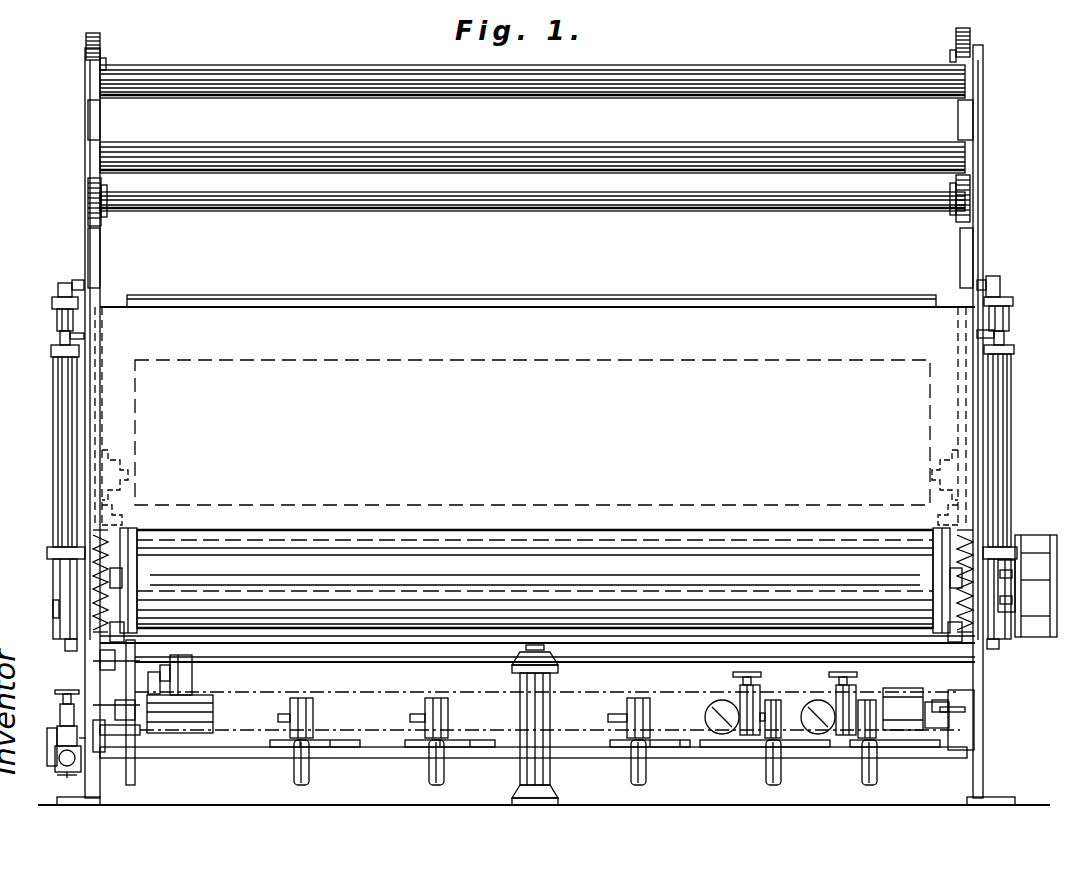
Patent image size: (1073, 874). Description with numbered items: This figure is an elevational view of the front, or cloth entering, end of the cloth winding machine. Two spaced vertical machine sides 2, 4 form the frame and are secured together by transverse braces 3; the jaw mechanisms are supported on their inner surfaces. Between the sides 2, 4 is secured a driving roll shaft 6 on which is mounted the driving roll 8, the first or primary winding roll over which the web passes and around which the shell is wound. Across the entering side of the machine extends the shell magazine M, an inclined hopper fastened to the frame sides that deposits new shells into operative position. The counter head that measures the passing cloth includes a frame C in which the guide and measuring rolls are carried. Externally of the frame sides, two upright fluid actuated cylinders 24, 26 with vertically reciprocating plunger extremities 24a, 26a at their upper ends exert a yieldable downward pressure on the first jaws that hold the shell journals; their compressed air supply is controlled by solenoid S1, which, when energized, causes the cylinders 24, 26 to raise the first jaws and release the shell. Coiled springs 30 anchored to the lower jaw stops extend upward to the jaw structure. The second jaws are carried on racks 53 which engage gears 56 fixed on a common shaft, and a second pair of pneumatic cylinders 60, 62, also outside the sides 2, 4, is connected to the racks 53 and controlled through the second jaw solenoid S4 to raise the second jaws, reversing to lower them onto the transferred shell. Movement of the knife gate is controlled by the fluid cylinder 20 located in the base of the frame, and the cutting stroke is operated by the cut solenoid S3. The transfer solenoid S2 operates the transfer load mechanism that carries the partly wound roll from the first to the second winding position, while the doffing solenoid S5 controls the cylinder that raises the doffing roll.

The vertical machine side 2 is at (983, 188).
The transverse brace 3 is at (928, 751).
The vertical machine side 4 is at (85, 178).
The driving roll shaft 6 is at (118, 580).
The driving roll 8 is at (535, 579).
The fluid cylinder 20 is at (552, 681).
The fluid actuated cylinder 24 is at (1010, 422).
The plunger extremity 24a is at (1008, 334).
The fluid actuated cylinder 26 is at (62, 426).
The plunger extremity 26a is at (60, 343).
The coiled spring 30 is at (92, 604).
The rack 53 is at (100, 50).
The gear 56 is at (228, 95).
The pneumatic cylinder 60 is at (1010, 312).
The pneumatic cylinder 62 is at (58, 325).
The shell magazine M is at (532, 413).
The frame C is at (196, 681).
The solenoid S1 is at (875, 697).
The transfer solenoid S2 is at (448, 712).
The cut solenoid S3 is at (313, 712).
The second jaw solenoid S4 is at (780, 698).
The doffing solenoid S5 is at (650, 712).